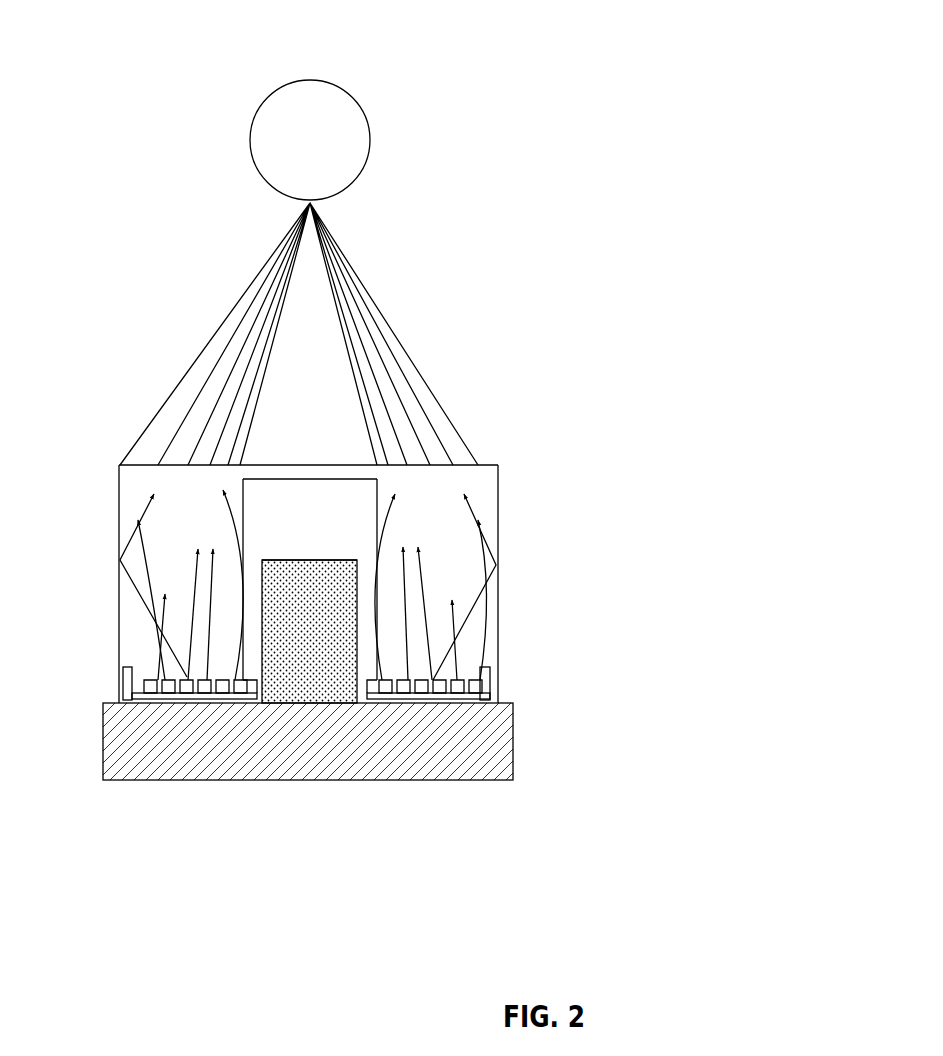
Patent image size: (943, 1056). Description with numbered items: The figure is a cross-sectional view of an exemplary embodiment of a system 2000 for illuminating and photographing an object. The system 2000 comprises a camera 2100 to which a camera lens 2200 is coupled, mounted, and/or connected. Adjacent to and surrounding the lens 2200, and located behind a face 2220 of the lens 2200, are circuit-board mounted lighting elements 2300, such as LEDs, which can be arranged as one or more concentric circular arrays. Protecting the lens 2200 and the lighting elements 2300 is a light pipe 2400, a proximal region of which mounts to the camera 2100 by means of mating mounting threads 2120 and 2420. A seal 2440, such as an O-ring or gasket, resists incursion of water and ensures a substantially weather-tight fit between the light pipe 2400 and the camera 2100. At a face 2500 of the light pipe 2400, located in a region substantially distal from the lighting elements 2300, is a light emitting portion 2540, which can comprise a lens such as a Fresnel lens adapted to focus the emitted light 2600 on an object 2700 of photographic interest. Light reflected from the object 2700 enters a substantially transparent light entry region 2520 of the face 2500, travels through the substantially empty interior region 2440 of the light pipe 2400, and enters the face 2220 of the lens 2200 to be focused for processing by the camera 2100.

The system 2000 is at (421, 36).
The camera 2100 is at (514, 753).
The mating mounting thread 2120 is at (132, 669).
The camera lens 2200 is at (305, 662).
The face of lens 2220 is at (556, 525).
The lighting elements 2300 is at (426, 704).
The light pipe 2400 is at (499, 621).
The mating mounting thread 2420 is at (426, 828).
The seal / interior region 2440 is at (311, 508).
The face of light pipe 2500 is at (499, 467).
The light entry region 2520 is at (314, 464).
The light emitting portion 2540 is at (394, 491).
The emitted light 2600 is at (358, 272).
The object 2700 is at (313, 148).